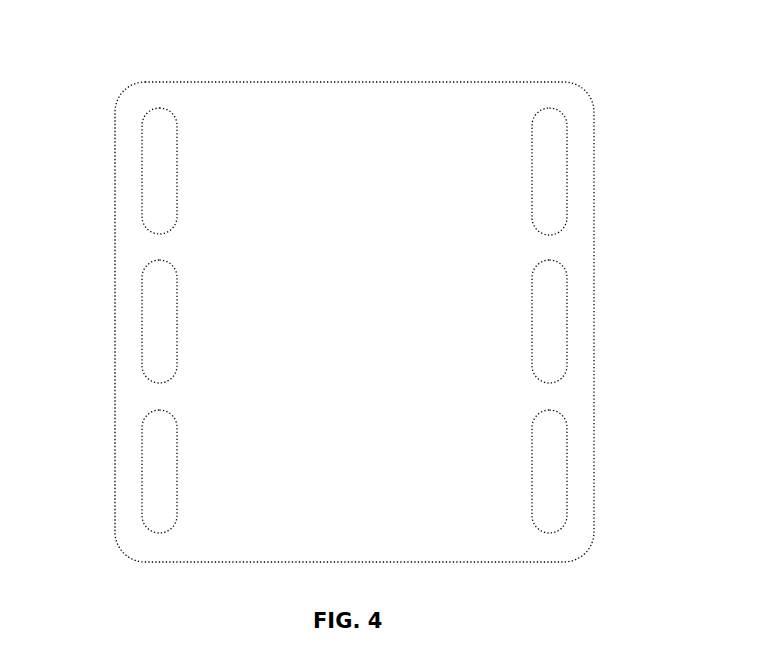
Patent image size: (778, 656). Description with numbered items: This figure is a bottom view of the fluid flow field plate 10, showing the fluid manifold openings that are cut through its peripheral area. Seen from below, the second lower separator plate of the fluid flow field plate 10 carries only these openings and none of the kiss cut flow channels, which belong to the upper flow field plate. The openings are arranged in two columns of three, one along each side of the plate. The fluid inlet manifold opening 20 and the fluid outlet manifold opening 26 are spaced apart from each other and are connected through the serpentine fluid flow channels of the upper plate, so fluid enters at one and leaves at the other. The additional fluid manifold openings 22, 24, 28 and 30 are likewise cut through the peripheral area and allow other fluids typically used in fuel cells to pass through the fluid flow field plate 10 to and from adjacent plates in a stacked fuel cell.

The fluid flow field plate 10 is at (690, 54).
The fluid inlet manifold opening 20 is at (155, 478).
The fluid manifold opening 22 is at (155, 322).
The fluid manifold opening 24 is at (157, 167).
The fluid outlet manifold opening 26 is at (555, 186).
The fluid manifold opening 28 is at (555, 340).
The fluid manifold opening 30 is at (555, 496).